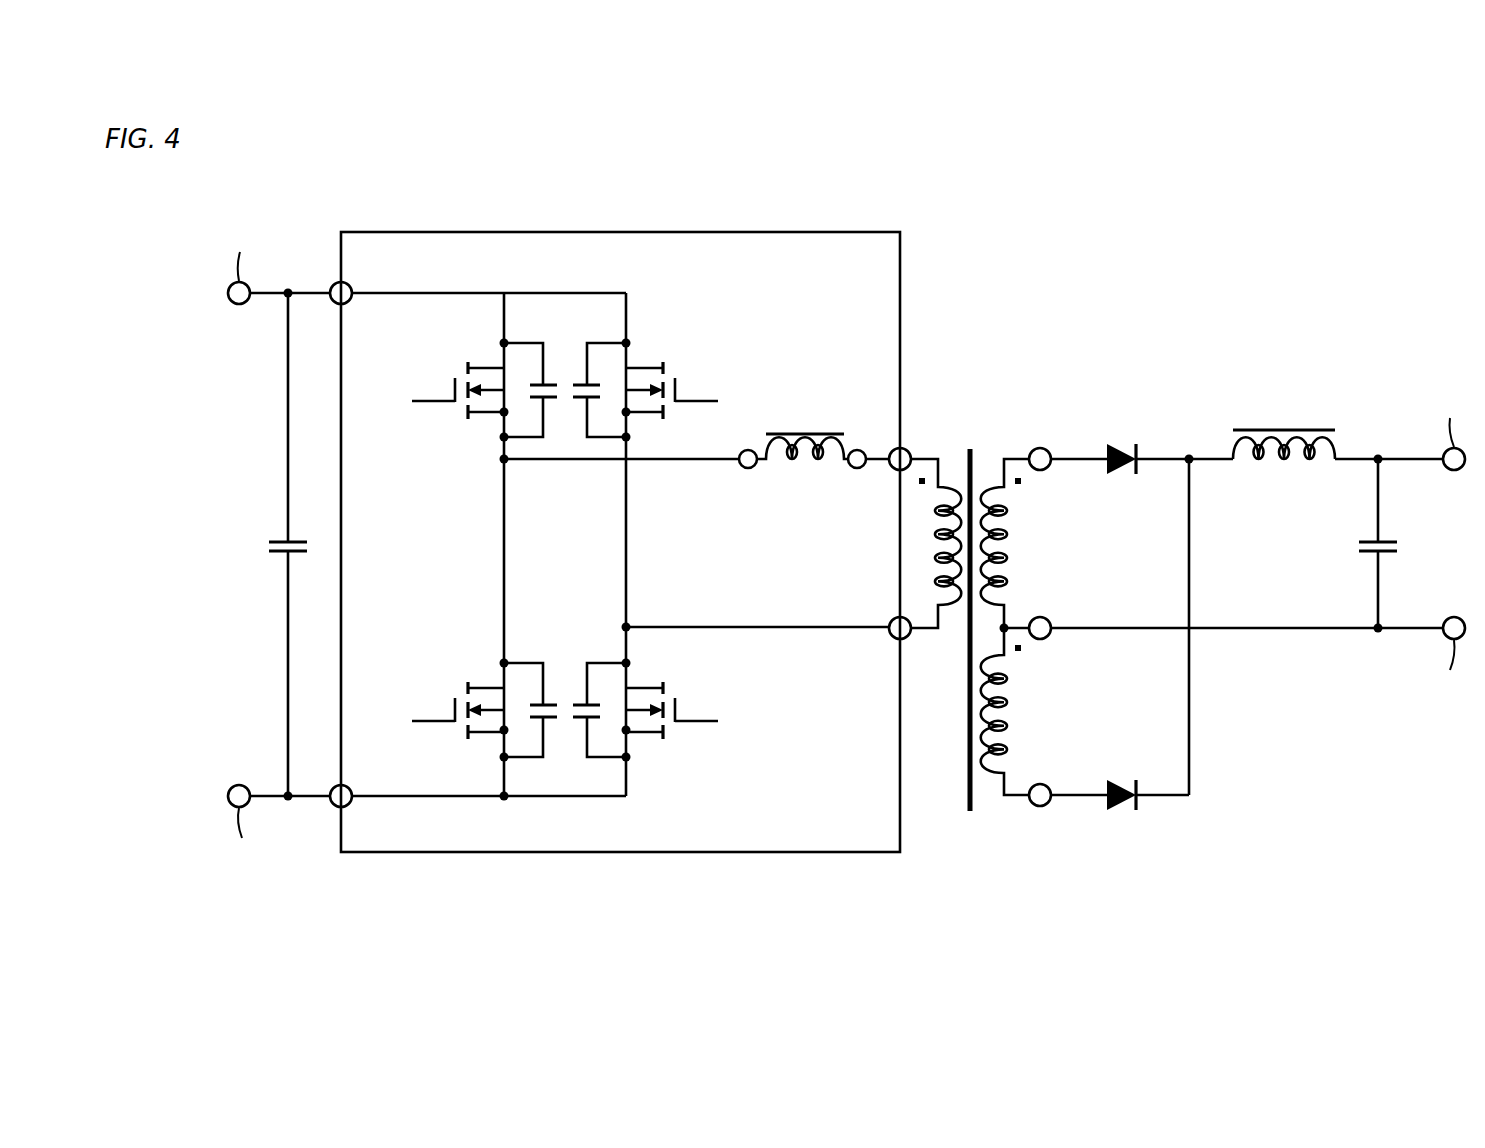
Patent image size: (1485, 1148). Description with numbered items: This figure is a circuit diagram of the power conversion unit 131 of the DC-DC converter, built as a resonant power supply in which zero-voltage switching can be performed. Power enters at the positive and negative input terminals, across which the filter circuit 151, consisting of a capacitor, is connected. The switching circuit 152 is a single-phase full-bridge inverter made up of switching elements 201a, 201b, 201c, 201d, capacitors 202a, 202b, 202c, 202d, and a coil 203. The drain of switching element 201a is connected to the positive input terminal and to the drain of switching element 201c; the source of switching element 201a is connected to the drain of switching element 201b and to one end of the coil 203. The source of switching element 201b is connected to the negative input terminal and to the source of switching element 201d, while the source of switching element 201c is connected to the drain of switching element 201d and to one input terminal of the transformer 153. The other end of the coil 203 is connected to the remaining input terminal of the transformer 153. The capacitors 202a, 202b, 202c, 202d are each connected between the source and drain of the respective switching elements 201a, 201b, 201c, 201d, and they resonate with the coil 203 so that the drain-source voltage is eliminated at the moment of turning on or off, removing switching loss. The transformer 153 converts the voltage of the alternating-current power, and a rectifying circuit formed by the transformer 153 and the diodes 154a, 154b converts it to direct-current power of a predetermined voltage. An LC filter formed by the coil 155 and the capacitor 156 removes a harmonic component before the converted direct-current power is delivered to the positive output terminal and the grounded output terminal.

The power conversion unit 131 is at (1228, 293).
The filter circuit 151 is at (277, 536).
The switching circuit 152 is at (792, 231).
The transformer 153 is at (975, 443).
The diode 154a is at (1120, 443).
The diode 154b is at (1112, 812).
The coil 155 is at (1288, 427).
The capacitor 156 is at (1400, 547).
The switching element 201a is at (458, 415).
The switching element 201b is at (458, 735).
The switching element 201c is at (672, 367).
The switching element 201d is at (672, 687).
The capacitor 202a is at (548, 382).
The capacitor 202b is at (548, 702).
The capacitor 202c is at (580, 400).
The capacitor 202d is at (578, 720).
The coil 203 is at (802, 428).